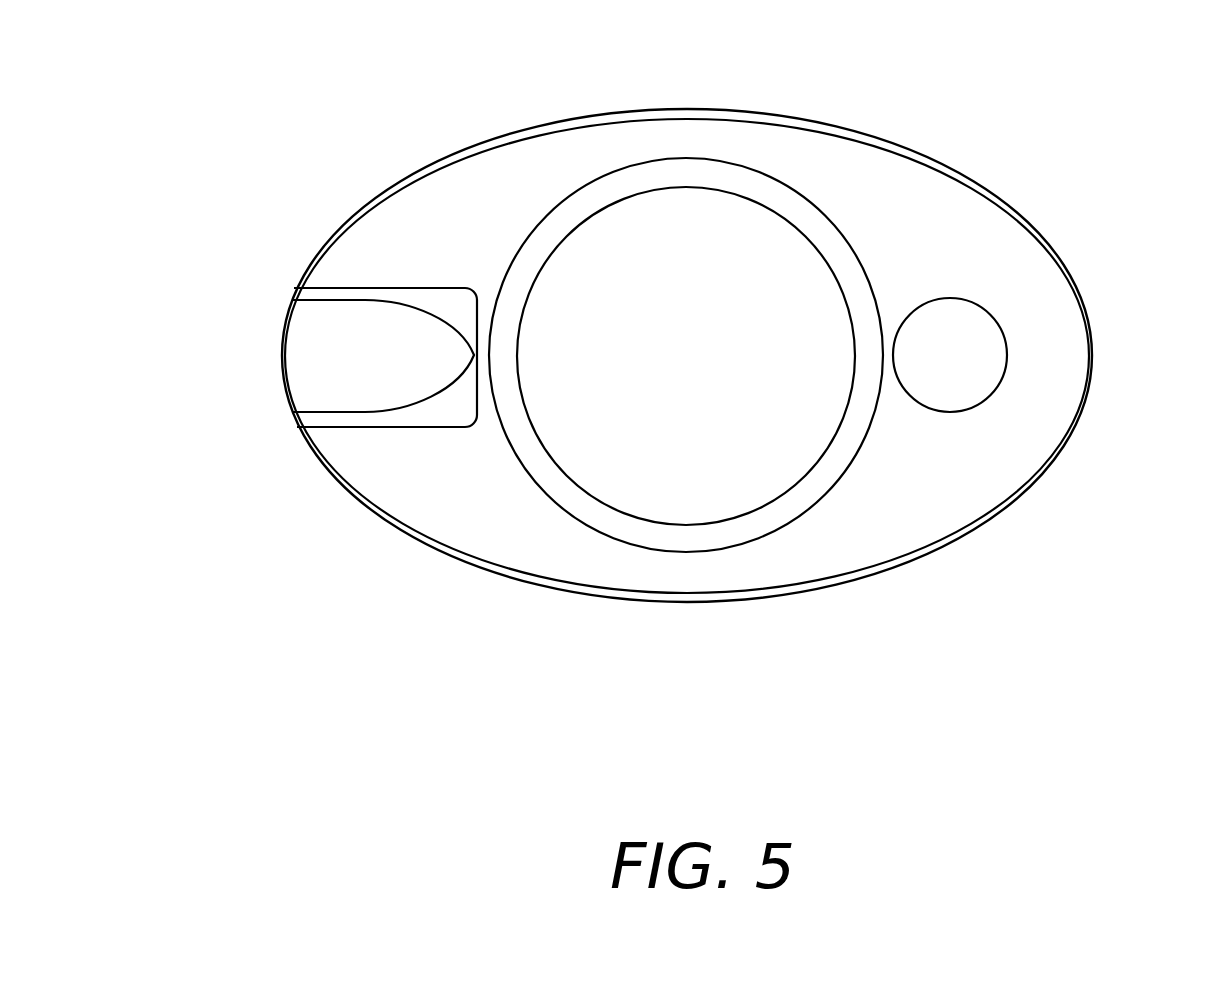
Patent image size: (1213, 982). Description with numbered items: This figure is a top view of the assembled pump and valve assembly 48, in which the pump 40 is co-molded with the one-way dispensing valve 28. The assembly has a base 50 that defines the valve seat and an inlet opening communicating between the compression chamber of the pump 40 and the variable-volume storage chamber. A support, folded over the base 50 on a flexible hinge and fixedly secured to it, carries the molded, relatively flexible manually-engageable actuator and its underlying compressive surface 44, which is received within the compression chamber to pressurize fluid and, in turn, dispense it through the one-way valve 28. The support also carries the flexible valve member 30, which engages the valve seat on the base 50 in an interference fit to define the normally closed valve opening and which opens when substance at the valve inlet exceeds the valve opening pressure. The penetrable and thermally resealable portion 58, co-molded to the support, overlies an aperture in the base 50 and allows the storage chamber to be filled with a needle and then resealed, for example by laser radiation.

The pump and valve assembly 48 is at (264, 180).
The base 50 is at (695, 597).
The one-way dispensing valve 28 is at (274, 442).
The flexible valve member 30 is at (288, 362).
The compressive surface 44 is at (692, 212).
The pump 40 is at (793, 270).
The penetrable and thermally resealable portion 58 is at (975, 322).